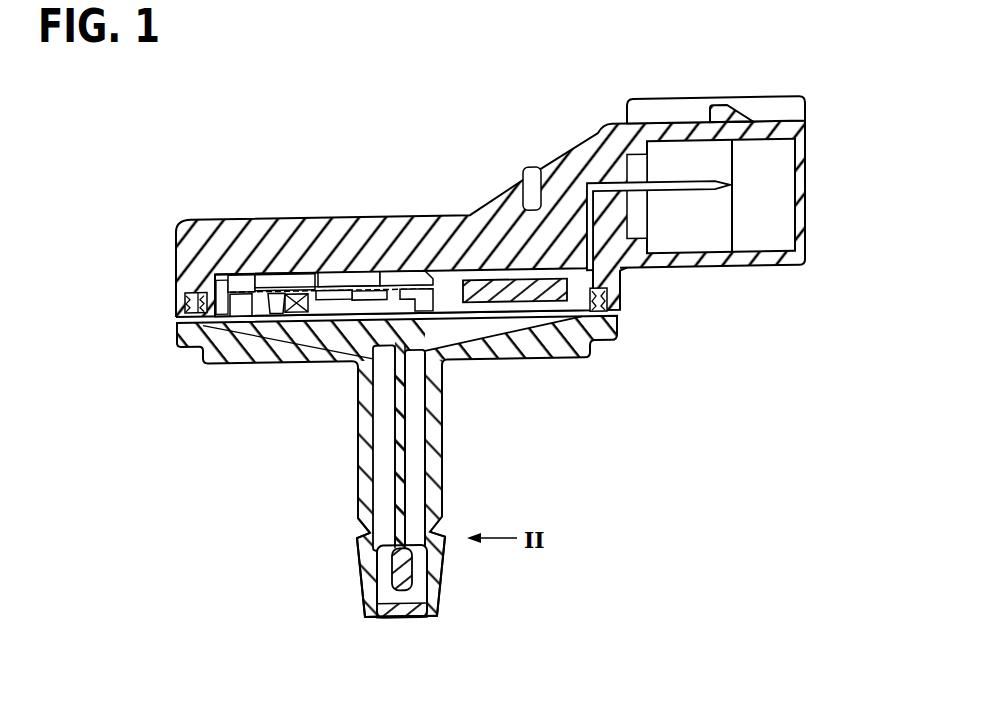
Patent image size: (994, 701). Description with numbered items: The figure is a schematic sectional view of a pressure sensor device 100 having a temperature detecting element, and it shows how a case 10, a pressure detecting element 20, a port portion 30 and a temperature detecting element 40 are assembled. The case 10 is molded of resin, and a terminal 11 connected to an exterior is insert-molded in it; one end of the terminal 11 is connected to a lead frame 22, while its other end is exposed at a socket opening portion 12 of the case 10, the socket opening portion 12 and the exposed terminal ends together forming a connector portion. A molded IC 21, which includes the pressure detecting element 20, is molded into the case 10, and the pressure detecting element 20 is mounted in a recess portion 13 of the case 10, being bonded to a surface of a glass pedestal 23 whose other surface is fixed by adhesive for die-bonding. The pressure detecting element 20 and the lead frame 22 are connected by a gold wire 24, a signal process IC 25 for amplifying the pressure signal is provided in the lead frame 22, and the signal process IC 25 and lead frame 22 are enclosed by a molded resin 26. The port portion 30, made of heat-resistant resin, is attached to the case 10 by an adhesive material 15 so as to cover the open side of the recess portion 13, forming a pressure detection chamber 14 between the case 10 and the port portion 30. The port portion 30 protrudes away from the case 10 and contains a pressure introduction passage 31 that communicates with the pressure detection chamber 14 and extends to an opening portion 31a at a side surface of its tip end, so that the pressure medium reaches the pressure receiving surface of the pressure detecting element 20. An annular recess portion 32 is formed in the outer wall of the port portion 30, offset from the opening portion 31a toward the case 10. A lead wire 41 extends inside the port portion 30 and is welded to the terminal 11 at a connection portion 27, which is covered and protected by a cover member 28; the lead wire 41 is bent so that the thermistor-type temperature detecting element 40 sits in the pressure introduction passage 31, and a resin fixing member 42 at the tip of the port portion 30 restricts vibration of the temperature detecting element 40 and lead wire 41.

The sensor device 100 is at (189, 214).
The case 10 is at (276, 230).
The terminal 11 is at (603, 190).
The socket opening portion 12 is at (766, 142).
The recess portion 13 is at (228, 298).
The pressure detection chamber 14 is at (358, 330).
The adhesive material 15 is at (186, 300).
The pressure detecting element 20 is at (286, 312).
The IC 21 is at (333, 260).
The lead frame 22 is at (388, 287).
The pedestal 23 is at (293, 288).
The wire 24 is at (252, 298).
The signal process IC 25 is at (332, 292).
The molded resin 26 is at (222, 283).
The connection portion 27 is at (522, 283).
The cover member 28 is at (546, 305).
The port portion 30 is at (437, 440).
The pressure introduction passage 31 is at (412, 406).
The opening portion 31a is at (413, 573).
The recess portion 32 is at (367, 524).
The temperature detecting element 40 is at (380, 570).
The lead wire 41 is at (410, 488).
The fixing member 42 is at (405, 616).